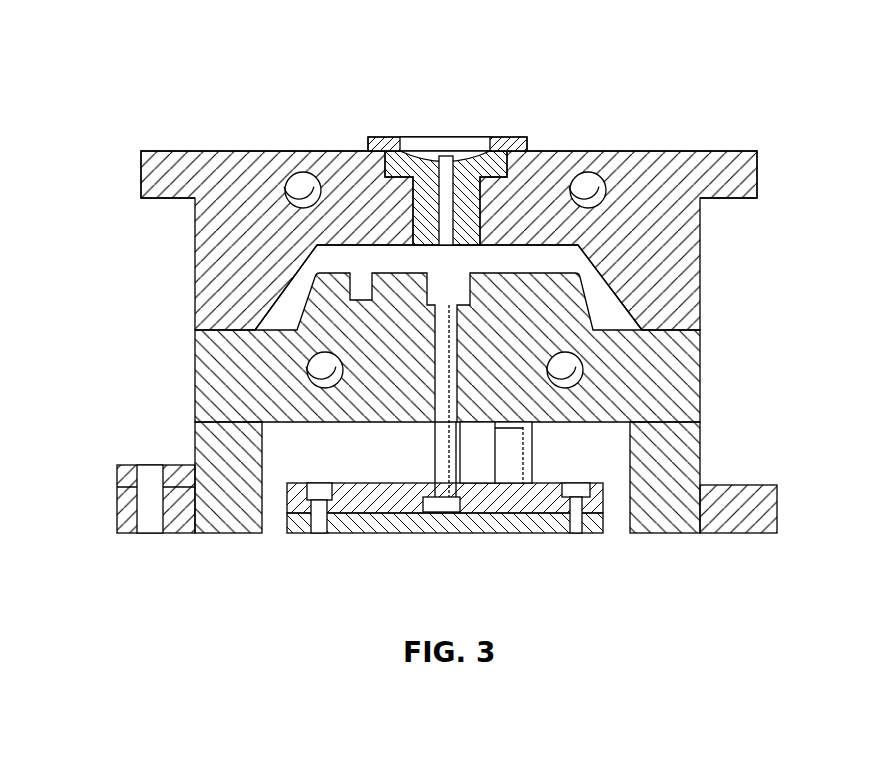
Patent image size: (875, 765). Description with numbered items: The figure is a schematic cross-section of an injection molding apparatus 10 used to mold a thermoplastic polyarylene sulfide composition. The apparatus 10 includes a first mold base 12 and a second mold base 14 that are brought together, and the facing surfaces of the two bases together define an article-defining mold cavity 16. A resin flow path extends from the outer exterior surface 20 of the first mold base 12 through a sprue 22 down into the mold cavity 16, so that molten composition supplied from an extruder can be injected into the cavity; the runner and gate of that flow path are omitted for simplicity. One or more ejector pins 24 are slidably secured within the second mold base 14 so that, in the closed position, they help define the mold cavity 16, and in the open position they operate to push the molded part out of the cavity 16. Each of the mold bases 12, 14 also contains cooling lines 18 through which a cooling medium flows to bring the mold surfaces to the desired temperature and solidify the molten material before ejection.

The injection molding apparatus 10 is at (495, 328).
The first mold base 12 is at (700, 295).
The second mold base 14 is at (700, 375).
The mold cavity 16 is at (547, 254).
The cooling lines 18 is at (302, 172).
The outer exterior surface 20 is at (238, 151).
The sprue 22 is at (470, 137).
The ejector pins 24 is at (430, 448).